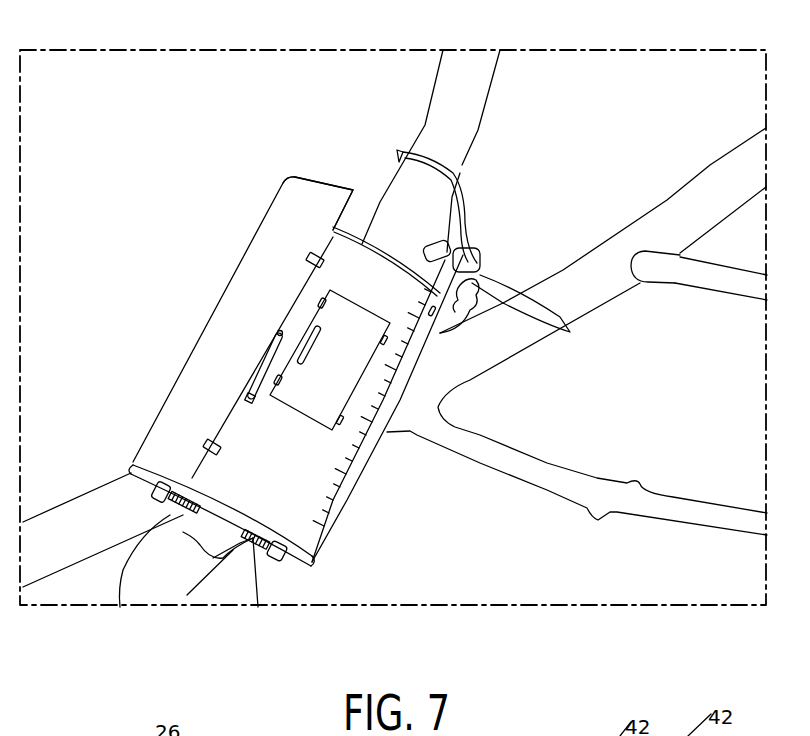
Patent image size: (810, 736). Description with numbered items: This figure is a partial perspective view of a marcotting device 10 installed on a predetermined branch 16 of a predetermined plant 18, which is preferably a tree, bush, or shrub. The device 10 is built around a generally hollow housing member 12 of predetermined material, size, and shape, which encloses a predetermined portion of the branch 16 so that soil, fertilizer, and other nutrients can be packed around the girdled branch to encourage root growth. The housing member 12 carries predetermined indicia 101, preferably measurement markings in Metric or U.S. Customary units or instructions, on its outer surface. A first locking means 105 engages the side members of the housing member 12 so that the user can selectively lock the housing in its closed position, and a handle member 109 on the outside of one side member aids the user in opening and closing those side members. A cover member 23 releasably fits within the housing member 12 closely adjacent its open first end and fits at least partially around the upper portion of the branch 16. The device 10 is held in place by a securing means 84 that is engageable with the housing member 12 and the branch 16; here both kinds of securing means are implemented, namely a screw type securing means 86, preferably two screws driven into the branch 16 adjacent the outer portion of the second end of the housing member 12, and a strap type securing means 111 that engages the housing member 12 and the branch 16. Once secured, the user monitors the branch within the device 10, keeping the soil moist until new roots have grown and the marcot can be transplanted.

The marcotting device 10 is at (354, 566).
The housing member 12 is at (333, 238).
The predetermined branch 16 is at (230, 545).
The predetermined plant 18 is at (455, 87).
The cover member 23 is at (481, 247).
The securing means 84 is at (460, 167).
The screw type securing means 86 is at (176, 500).
The predetermined indicia 101 is at (373, 383).
The first locking means 105 is at (307, 257).
The handle member 109 is at (255, 367).
The strap type securing means 111 is at (462, 212).